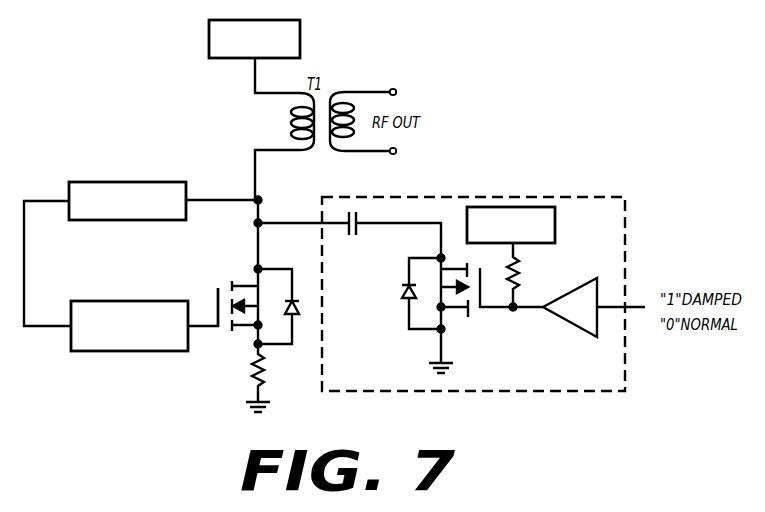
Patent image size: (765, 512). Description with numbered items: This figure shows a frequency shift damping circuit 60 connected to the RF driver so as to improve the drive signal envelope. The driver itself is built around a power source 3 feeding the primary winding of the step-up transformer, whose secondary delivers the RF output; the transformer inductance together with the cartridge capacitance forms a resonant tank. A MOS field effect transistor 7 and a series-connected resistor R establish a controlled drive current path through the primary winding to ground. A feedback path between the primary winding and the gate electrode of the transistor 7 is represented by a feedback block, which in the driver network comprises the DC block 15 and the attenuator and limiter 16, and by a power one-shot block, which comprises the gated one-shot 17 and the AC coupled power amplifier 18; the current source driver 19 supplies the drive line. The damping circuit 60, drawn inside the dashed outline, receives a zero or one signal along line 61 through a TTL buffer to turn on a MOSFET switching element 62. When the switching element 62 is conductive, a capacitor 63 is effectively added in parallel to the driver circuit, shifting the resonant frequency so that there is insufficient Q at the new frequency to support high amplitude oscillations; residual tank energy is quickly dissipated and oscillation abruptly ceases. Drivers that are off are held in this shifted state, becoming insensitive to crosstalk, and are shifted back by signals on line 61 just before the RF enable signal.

The power source 3 is at (300, 37).
The MOS field effect transistor 7 is at (242, 270).
The DC block 15 is at (127, 184).
The attenuator and limiter 16 is at (128, 182).
The gated one-shot 17 is at (129, 343).
The AC coupled power amplifier 18 is at (108, 352).
The current source driver 19 is at (296, 375).
The frequency shift damping circuit 60 is at (598, 223).
The line 61 is at (636, 304).
The MOSFET switching element 62 is at (446, 313).
The capacitor 63 is at (357, 229).